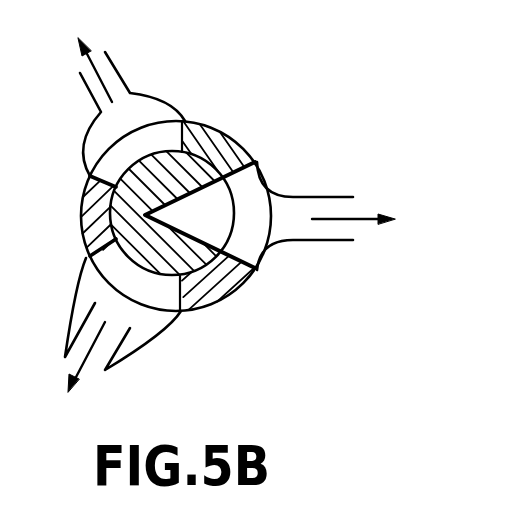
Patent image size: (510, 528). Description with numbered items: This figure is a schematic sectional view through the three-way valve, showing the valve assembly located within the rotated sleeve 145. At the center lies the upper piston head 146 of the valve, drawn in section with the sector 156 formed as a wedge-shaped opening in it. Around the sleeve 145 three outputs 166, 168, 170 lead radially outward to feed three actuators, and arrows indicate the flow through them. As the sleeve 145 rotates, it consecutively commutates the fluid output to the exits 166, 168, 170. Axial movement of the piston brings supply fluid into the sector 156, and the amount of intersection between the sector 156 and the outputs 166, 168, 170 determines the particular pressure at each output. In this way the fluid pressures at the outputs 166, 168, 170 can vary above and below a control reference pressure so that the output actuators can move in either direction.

The rotated sleeve 145 is at (200, 132).
The upper piston head 146 is at (190, 168).
The sector 156 is at (212, 207).
The output 166 is at (330, 243).
The output 168 is at (108, 64).
The output 170 is at (104, 350).